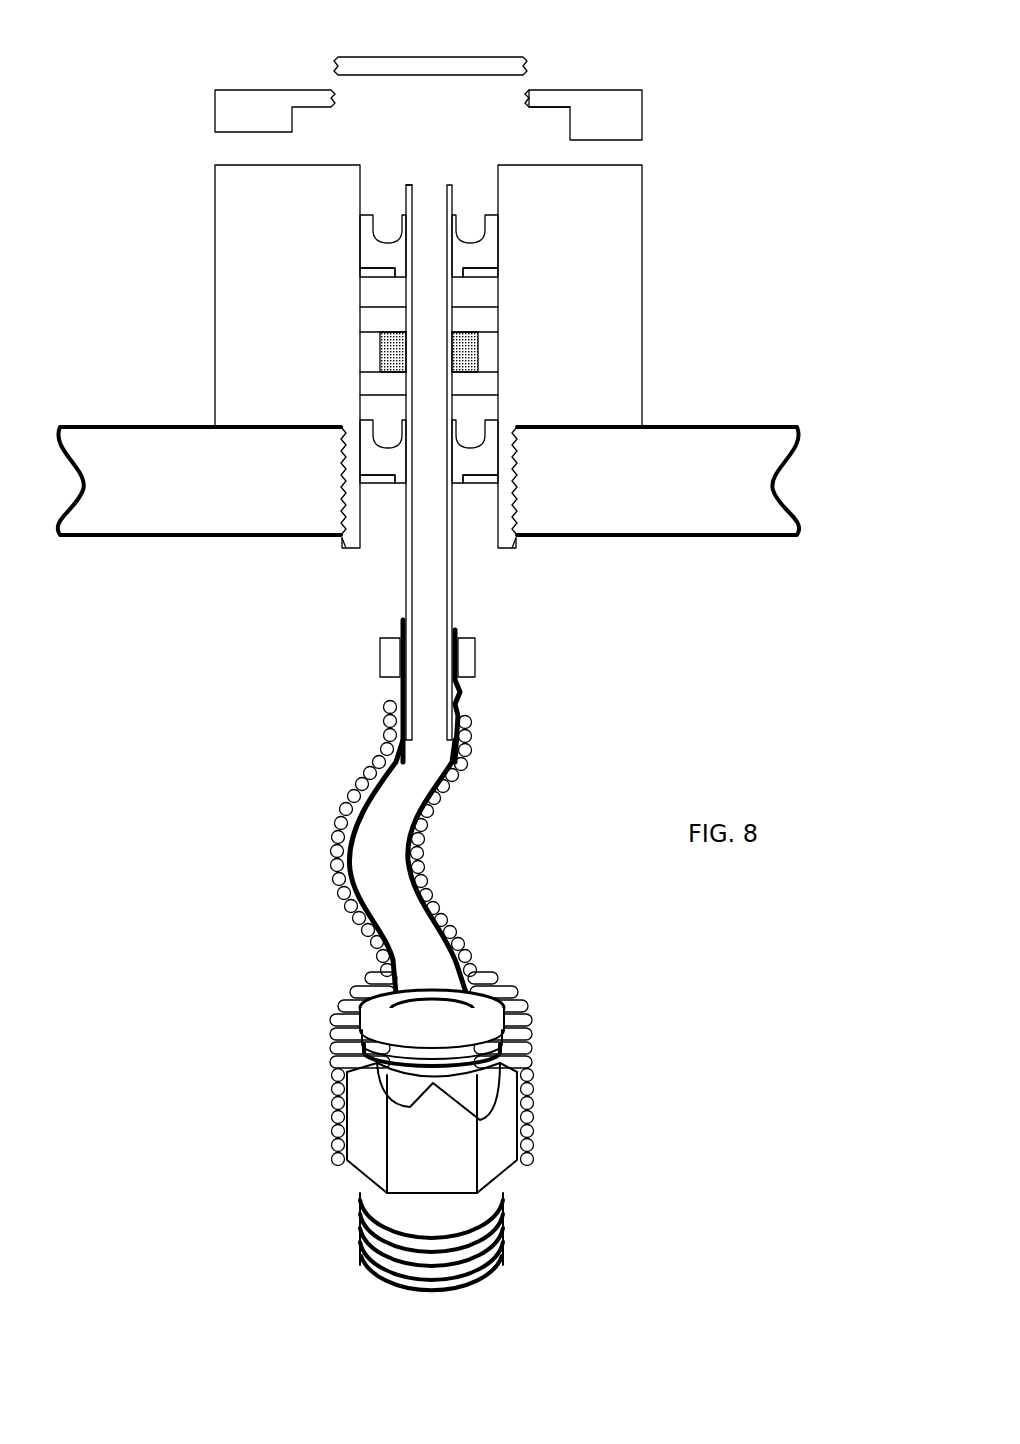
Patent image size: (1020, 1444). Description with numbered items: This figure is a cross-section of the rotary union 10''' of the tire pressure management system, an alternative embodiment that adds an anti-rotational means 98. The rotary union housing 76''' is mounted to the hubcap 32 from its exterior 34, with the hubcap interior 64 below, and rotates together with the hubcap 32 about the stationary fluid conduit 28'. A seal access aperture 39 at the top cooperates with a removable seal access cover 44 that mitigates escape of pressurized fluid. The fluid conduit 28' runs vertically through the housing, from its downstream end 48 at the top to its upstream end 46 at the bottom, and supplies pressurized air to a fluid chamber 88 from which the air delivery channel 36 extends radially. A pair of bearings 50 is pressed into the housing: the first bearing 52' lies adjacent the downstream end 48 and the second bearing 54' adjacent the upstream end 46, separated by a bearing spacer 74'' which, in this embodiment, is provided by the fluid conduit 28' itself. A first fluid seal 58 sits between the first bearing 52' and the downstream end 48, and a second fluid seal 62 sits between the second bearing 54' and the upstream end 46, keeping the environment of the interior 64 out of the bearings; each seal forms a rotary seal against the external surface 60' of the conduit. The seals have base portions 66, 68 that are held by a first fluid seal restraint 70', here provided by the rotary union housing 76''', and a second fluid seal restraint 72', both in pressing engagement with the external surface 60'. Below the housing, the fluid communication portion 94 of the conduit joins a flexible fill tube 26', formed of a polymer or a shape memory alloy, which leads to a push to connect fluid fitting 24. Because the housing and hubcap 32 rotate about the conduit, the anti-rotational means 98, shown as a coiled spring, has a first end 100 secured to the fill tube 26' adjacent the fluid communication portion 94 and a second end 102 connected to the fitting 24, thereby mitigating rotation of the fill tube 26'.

The rotary union 10''' is at (637, 45).
The push to connect fluid fitting 24 is at (497, 1155).
The fill tube 26' is at (338, 812).
The fluid conduit 28' is at (355, 462).
The hubcap 32 is at (132, 560).
The exterior 34 is at (130, 426).
The air delivery channel 36 is at (657, 150).
The seal access aperture 39 is at (328, 72).
The seal access cover 44 is at (413, 70).
The upstream end 46 is at (432, 740).
The downstream end 48 is at (432, 166).
The pair of bearings 50 is at (507, 365).
The first bearing 52' is at (309, 321).
The second bearing 54' is at (319, 377).
The first fluid seal 58 is at (358, 235).
The external surface 60' is at (382, 135).
The second fluid seal 62 is at (507, 408).
The interior 64 is at (240, 536).
The base portion 66 is at (365, 257).
The base portion 68 is at (485, 465).
The first fluid seal restraint 70' is at (309, 263).
The second fluid seal restraint 72' is at (501, 560).
The bearing spacer 74'' is at (376, 346).
The rotary union housing 76''' is at (644, 229).
The fluid chamber 88 is at (508, 92).
The fluid communication portion 94 is at (398, 683).
The anti-rotational means 98 is at (320, 1010).
The first end 100 is at (465, 718).
The second end 102 is at (535, 1155).